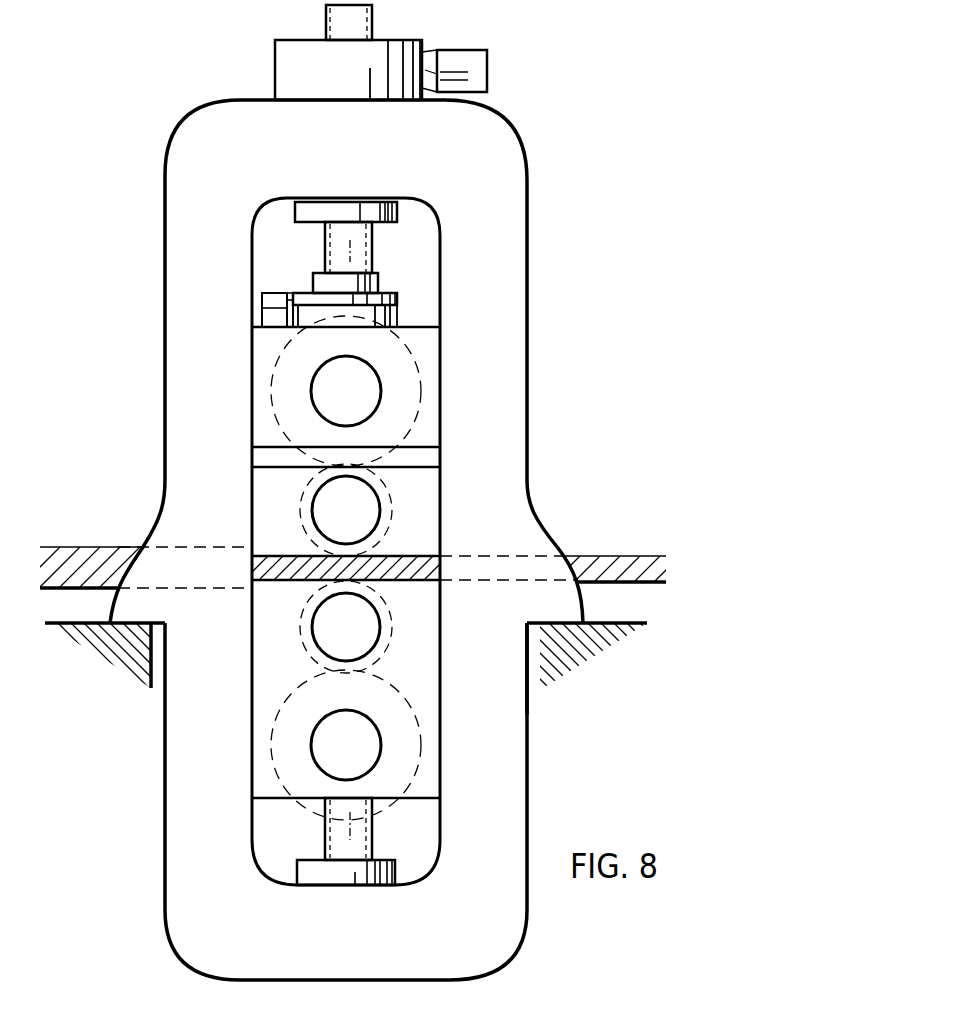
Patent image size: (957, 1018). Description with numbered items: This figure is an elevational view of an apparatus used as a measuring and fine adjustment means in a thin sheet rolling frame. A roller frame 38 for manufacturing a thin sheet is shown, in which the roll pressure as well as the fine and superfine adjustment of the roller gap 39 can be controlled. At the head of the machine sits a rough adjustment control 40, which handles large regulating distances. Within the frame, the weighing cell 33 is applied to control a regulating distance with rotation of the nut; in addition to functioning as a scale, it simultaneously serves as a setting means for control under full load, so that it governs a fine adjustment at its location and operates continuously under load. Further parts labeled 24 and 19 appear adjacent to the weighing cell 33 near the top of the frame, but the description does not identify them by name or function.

The rough adjustment control 40 is at (292, 72).
The weighing cell 33 is at (393, 316).
The bearing block 24 is at (268, 301).
The shaft journal 19 is at (292, 292).
The roller frame 38 is at (495, 385).
The roller gap 39 is at (343, 568).